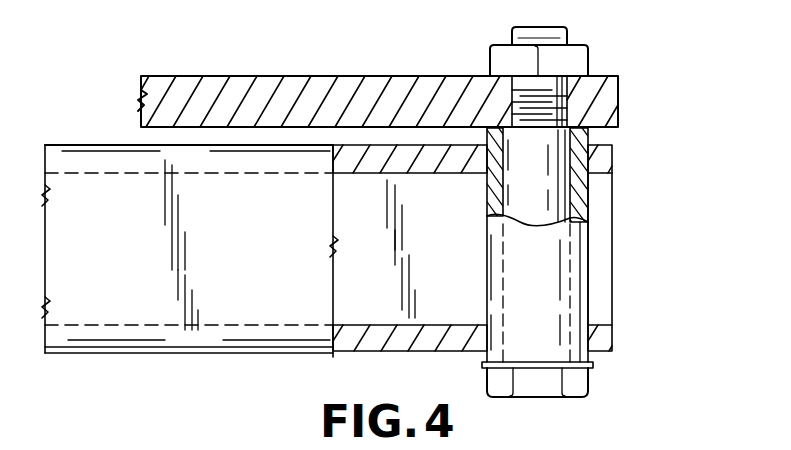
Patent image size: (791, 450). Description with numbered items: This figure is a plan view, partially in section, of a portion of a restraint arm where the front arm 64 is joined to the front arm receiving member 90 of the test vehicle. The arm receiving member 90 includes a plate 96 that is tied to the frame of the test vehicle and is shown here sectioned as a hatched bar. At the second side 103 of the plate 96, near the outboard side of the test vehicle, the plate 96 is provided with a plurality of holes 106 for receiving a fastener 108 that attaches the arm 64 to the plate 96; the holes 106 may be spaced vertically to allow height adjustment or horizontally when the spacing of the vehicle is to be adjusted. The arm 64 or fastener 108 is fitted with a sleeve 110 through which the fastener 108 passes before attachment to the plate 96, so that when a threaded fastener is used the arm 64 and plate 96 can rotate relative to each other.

The front arm 64 is at (132, 332).
The arm receiving member 90 is at (628, 103).
The plate 96 is at (298, 74).
The second side 103 is at (451, 129).
The holes 106 is at (515, 91).
The fastener 108 is at (582, 383).
The sleeve 110 is at (580, 288).